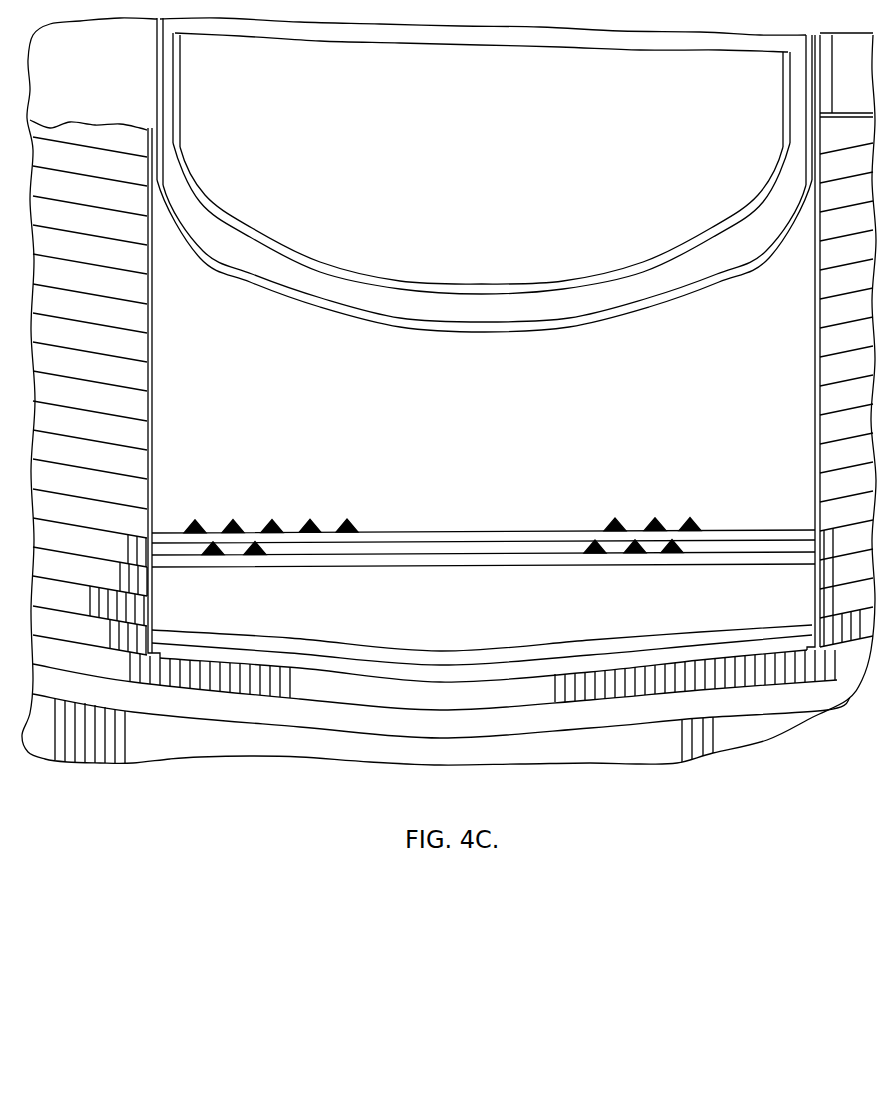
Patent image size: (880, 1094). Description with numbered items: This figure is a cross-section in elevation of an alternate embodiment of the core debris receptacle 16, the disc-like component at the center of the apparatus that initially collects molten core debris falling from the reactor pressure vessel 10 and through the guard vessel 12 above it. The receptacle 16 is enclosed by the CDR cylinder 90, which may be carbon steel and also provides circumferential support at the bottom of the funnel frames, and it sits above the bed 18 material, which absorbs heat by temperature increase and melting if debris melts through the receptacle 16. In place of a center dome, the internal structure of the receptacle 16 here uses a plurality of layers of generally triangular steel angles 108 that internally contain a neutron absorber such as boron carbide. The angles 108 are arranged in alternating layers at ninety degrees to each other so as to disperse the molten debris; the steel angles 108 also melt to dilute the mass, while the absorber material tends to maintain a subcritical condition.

The reactor pressure vessel 10 is at (722, 233).
The guard vessel 12 is at (705, 285).
The core debris receptacle 16 is at (841, 755).
The bed 18 is at (150, 348).
The CDR cylinder 90 is at (150, 445).
The triangular steel angles 108 is at (439, 532).